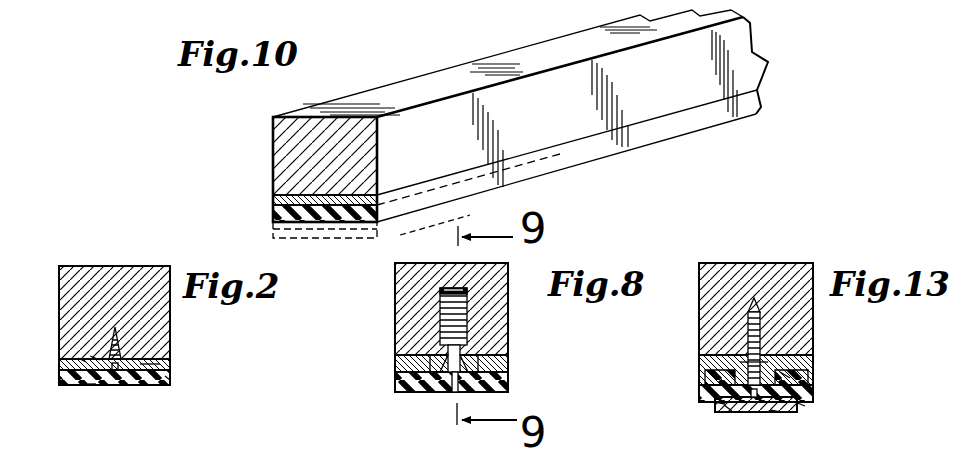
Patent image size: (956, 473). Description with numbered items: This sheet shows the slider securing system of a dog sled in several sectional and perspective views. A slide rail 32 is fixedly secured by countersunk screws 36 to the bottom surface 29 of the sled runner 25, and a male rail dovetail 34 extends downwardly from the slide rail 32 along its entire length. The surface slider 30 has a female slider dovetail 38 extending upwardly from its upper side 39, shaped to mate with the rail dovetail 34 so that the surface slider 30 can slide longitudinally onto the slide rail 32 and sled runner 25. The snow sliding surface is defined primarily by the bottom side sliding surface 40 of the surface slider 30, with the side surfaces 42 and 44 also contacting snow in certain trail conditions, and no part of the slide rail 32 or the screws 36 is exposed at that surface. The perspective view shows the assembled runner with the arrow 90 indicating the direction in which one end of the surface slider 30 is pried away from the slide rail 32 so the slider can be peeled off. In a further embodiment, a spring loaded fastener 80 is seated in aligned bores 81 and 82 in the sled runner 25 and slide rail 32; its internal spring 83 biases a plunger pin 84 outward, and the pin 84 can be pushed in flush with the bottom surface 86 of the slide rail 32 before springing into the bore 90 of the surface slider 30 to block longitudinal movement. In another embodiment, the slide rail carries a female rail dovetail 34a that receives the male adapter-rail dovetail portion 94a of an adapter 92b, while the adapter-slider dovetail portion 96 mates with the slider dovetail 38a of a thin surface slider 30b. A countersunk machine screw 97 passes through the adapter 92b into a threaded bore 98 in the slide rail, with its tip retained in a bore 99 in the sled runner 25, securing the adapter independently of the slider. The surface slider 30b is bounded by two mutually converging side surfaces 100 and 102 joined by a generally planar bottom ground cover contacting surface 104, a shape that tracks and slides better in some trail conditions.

In FIG. 10, the sled runner 25 is at (370, 95).
In FIG. 2, the sled runner 25 is at (93, 270).
In FIG. 8, the sled runner 25 is at (422, 262).
In FIG. 13, the sled runner 25 is at (724, 258).
In FIG. 10, the slide rail 32 is at (341, 195).
In FIG. 2, the slide rail 32 is at (141, 352).
In FIG. 8, the slide rail 32 is at (493, 350).
In FIG. 13, the slide rail 32 is at (791, 350).
In FIG. 10, the surface slider 30 is at (413, 220).
In FIG. 2, the surface slider 30 is at (156, 386).
In FIG. 8, the surface slider 30 is at (513, 389).
In FIG. 10, the bore 90 is at (448, 208).
In FIG. 8, the bore 90 is at (470, 392).
In FIG. 2, the countersunk screws 36 is at (124, 333).
In FIG. 2, the slider dovetail 38 is at (115, 373).
In FIG. 2, the upper side 39 is at (96, 358).
In FIG. 2, the bottom surface 29 is at (82, 360).
In FIG. 2, the rail dovetail 34 is at (151, 364).
In FIG. 2, the side surface 44 is at (170, 378).
In FIG. 2, the side surface 42 is at (60, 378).
In FIG. 2, the bottom side sliding surface 40 is at (92, 386).
In FIG. 8, the spring loaded fastener 80 is at (432, 323).
In FIG. 8, the bore 81 is at (468, 300).
In FIG. 8, the internal spring 83 is at (439, 296).
In FIG. 8, the bore 82 is at (440, 362).
In FIG. 8, the plunger pin 84 is at (420, 392).
In FIG. 8, the bottom surface 86 is at (509, 385).
In FIG. 13, the countersunk machine screw 97 is at (763, 301).
In FIG. 13, the bore 99 is at (748, 311).
In FIG. 13, the threaded bore 98 is at (750, 362).
In FIG. 13, the female rail dovetail 34a is at (788, 374).
In FIG. 13, the adapter 92b is at (816, 388).
In FIG. 13, the adapter-slider dovetail portion 96 is at (814, 396).
In FIG. 13, the side surface 102 is at (800, 404).
In FIG. 13, the side surface 100 is at (722, 402).
In FIG. 13, the adapter-rail dovetail portion 94a is at (728, 409).
In FIG. 13, the slider dovetail 38a is at (754, 413).
In FIG. 13, the surface slider 30b is at (790, 413).
In FIG. 13, the bottom ground cover contacting surface 104 is at (775, 413).